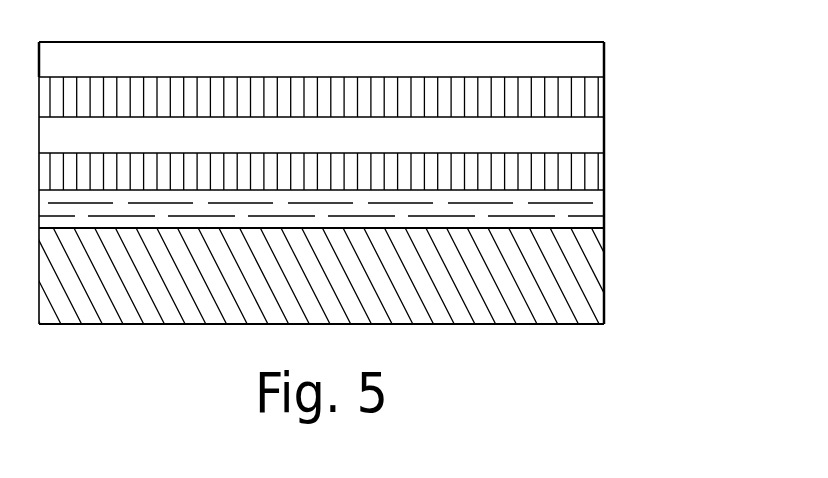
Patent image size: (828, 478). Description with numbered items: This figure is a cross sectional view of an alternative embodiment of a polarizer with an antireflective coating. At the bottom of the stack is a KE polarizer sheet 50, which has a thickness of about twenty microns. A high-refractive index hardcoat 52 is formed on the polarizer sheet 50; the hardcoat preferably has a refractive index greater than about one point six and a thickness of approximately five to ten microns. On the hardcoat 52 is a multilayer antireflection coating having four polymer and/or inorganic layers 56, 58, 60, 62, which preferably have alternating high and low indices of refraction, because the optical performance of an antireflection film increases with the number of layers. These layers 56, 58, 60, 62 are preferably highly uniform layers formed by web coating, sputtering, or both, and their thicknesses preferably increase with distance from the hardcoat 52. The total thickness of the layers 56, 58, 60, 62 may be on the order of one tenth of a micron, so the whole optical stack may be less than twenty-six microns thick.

The KE polarizer sheet 50 is at (607, 286).
The hardcoat 52 is at (607, 209).
The polymer or inorganic layer 56 is at (607, 172).
The polymer or inorganic layer 58 is at (607, 135).
The polymer or inorganic layer 60 is at (607, 98).
The polymer or inorganic layer 62 is at (607, 62).